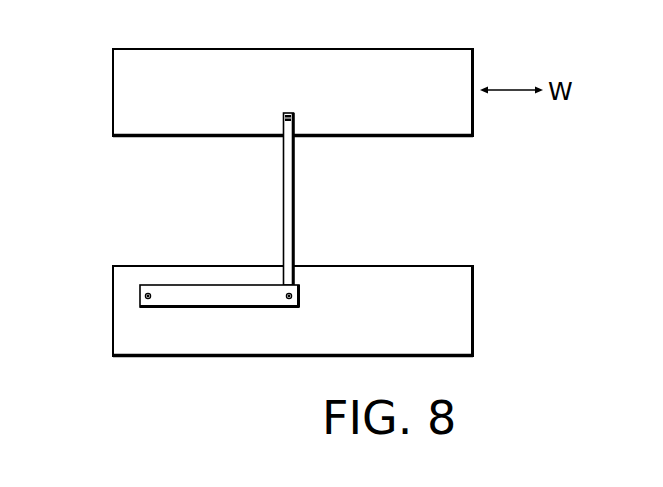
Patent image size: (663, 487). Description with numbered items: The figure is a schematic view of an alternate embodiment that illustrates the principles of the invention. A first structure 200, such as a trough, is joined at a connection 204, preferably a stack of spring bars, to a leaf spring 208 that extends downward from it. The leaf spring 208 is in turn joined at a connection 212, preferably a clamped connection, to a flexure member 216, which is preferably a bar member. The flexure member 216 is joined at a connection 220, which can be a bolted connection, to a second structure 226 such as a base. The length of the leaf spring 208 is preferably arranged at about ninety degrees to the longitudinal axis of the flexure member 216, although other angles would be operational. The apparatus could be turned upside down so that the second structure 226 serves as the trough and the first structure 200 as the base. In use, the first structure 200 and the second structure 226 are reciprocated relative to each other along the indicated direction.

The first structure 200 is at (193, 49).
The connection 204 is at (292, 113).
The leaf spring 208 is at (295, 202).
The connection 212 is at (296, 296).
The flexure member 216 is at (207, 307).
The connection 220 is at (145, 296).
The second structure 226 is at (163, 347).